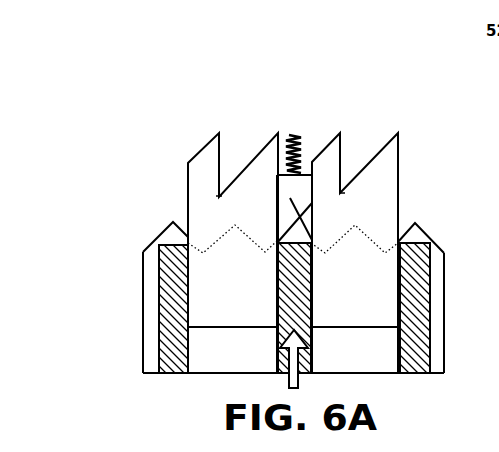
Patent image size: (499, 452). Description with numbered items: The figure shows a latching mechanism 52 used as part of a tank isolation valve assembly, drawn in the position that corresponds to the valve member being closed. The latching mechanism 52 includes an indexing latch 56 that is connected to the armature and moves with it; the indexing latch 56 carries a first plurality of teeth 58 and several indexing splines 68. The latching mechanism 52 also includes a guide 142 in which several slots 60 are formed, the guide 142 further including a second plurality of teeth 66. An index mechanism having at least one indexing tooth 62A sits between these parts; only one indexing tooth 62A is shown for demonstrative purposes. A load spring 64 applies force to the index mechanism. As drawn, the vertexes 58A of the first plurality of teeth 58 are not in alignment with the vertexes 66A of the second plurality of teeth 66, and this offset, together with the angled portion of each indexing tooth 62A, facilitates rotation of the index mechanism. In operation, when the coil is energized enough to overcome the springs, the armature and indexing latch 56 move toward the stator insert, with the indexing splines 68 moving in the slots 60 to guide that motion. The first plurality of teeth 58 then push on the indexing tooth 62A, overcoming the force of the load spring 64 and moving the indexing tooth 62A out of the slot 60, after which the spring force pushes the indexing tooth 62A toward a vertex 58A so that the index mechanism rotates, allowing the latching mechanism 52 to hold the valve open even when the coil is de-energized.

The latching mechanism 52 is at (141, 105).
The indexing latch 56 is at (440, 295).
The first plurality of teeth 58 is at (182, 228).
The vertexes of the first plurality of teeth 58A is at (382, 247).
The slots 60 is at (283, 196).
The indexing tooth 62A is at (298, 203).
The load spring 64 is at (300, 143).
The second plurality of teeth 66 is at (206, 148).
The vertexes of the second plurality of teeth 66A is at (222, 183).
The indexing splines 68 is at (168, 340).
The guide 142 is at (207, 270).